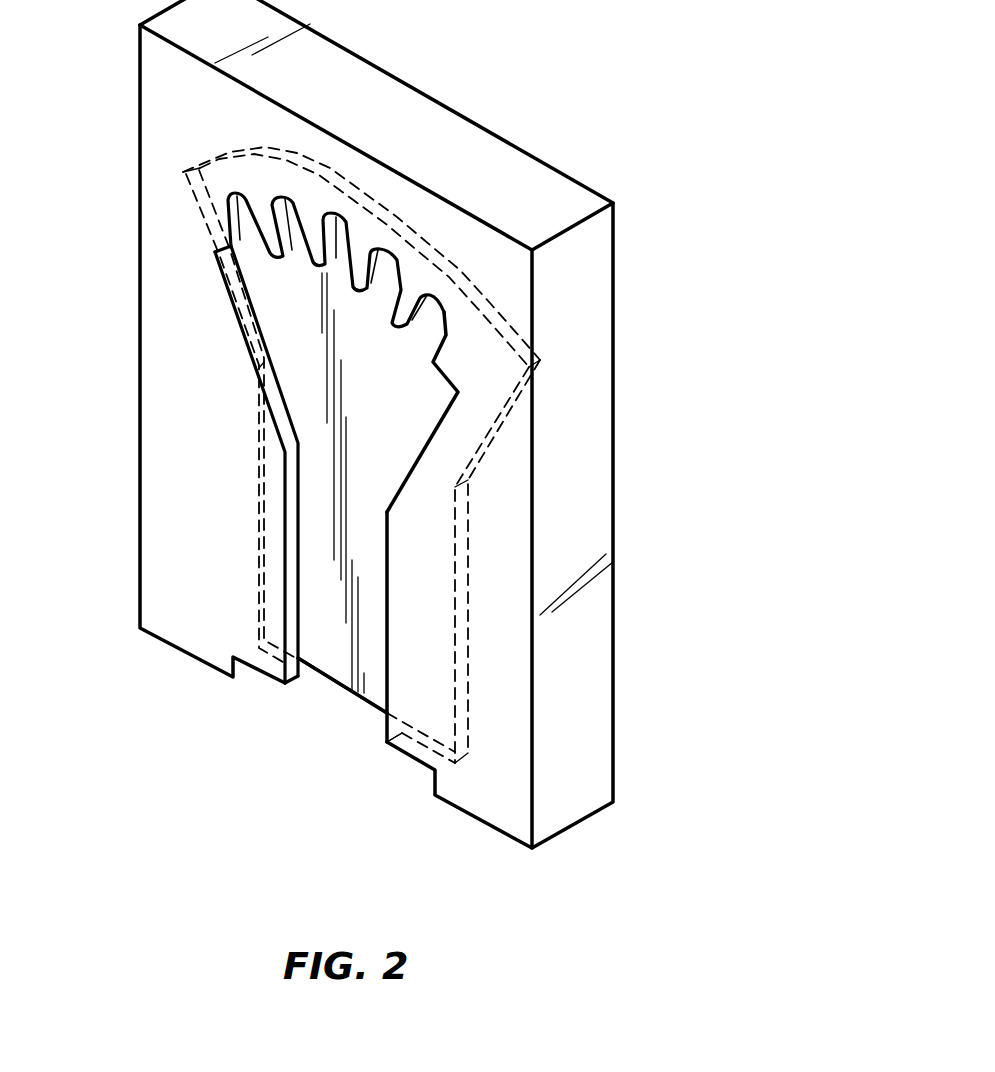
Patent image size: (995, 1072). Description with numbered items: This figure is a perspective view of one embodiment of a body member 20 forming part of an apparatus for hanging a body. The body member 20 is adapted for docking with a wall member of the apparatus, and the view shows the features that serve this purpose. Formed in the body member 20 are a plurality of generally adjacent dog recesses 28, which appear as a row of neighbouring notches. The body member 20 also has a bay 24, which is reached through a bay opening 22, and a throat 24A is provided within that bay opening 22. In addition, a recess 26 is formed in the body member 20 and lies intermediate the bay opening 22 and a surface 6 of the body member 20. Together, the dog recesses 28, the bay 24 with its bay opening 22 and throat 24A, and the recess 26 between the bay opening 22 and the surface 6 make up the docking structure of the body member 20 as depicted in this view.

The body member 20 is at (540, 193).
The surface 6 is at (386, 393).
The bay opening 22 is at (293, 593).
The bay 24 is at (295, 327).
The throat 24A is at (323, 688).
The recess 26 is at (467, 556).
The dog recesses 28 is at (387, 252).